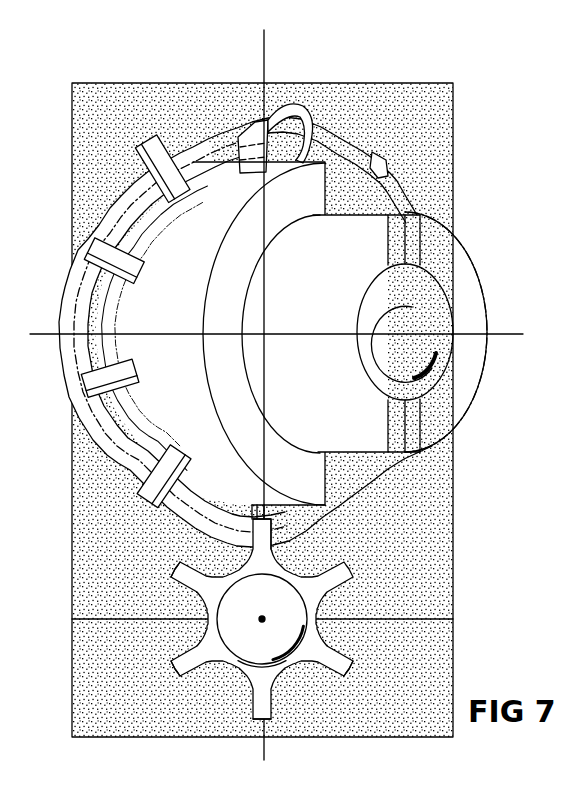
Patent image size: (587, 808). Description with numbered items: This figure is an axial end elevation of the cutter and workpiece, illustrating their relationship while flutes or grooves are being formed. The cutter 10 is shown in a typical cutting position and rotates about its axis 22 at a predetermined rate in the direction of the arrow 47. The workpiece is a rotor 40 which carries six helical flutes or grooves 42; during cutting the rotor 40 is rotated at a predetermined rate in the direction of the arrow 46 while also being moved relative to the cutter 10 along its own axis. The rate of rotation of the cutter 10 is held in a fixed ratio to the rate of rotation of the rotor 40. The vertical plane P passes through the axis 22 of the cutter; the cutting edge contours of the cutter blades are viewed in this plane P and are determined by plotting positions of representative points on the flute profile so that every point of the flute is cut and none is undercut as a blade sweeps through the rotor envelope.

The vertical plane P is at (455, 161).
The cutter 10 is at (469, 224).
The axis 22 is at (508, 315).
The arrow 47 is at (420, 394).
The rotor 40 is at (350, 556).
The helical flutes or grooves 42 is at (205, 562).
The arrow 46 is at (357, 652).